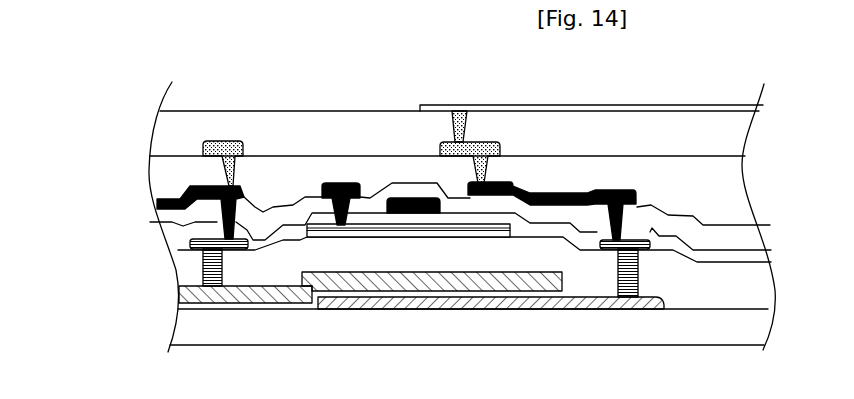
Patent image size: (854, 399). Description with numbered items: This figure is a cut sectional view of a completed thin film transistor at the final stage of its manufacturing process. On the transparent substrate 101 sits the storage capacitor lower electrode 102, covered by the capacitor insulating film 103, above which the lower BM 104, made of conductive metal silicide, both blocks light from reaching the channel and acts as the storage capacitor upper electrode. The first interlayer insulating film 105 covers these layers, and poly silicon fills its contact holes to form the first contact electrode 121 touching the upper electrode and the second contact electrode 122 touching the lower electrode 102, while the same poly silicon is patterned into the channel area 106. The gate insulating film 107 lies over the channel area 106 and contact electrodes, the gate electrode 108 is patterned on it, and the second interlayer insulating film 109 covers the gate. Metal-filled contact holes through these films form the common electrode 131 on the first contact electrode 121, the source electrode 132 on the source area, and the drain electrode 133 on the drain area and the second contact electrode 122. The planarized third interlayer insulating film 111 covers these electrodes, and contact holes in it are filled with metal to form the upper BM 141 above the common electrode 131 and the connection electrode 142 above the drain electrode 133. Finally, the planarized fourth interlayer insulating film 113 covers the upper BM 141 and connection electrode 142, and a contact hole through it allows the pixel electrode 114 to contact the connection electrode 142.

The transparent substrate 101 is at (760, 333).
The storage capacitor lower electrode 102 is at (673, 304).
The capacitor insulating film 103 is at (178, 305).
The lower BM 104 is at (180, 286).
The first interlayer insulating film 105 is at (183, 274).
The channel area 106 is at (385, 237).
The gate insulating film 107 is at (176, 245).
The gate electrode 108 is at (396, 198).
The second interlayer insulating film 109 is at (742, 241).
The third interlayer insulating film 111 is at (735, 176).
The fourth interlayer insulating film 113 is at (735, 134).
The pixel electrode 114 is at (640, 105).
The first contact electrode 121 is at (167, 221).
The second contact electrode 122 is at (649, 233).
The common electrode 131 is at (157, 202).
The source electrode 132 is at (323, 183).
The drain electrode 133 is at (551, 192).
The upper BM 141 is at (218, 142).
The connection electrode 142 is at (440, 144).